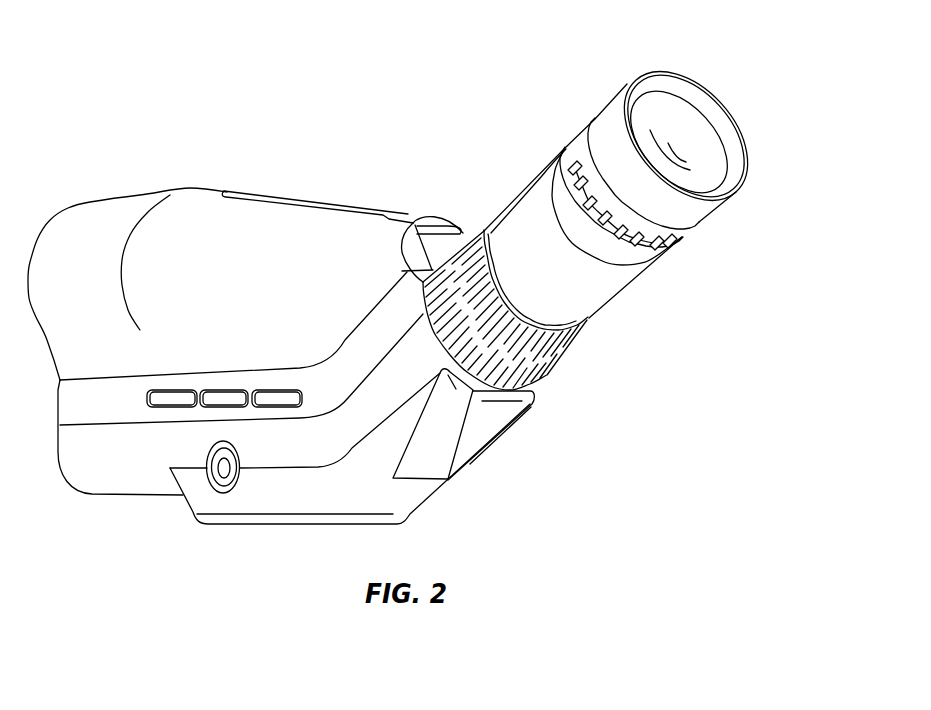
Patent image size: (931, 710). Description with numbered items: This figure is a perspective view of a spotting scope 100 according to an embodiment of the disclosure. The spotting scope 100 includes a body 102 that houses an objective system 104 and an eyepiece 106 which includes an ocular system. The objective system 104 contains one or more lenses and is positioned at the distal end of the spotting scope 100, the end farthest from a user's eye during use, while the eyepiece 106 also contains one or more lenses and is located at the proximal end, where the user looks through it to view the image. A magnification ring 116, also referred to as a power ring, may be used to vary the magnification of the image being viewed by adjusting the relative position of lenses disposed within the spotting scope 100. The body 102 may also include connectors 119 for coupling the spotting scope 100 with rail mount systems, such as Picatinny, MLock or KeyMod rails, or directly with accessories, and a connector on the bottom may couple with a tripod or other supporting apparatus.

The spotting scope 100 is at (405, 158).
The body 102 is at (307, 190).
The objective system 104 is at (168, 168).
The eyepiece 106 is at (675, 280).
The magnification ring 116 is at (538, 145).
The connector 119 is at (217, 473).